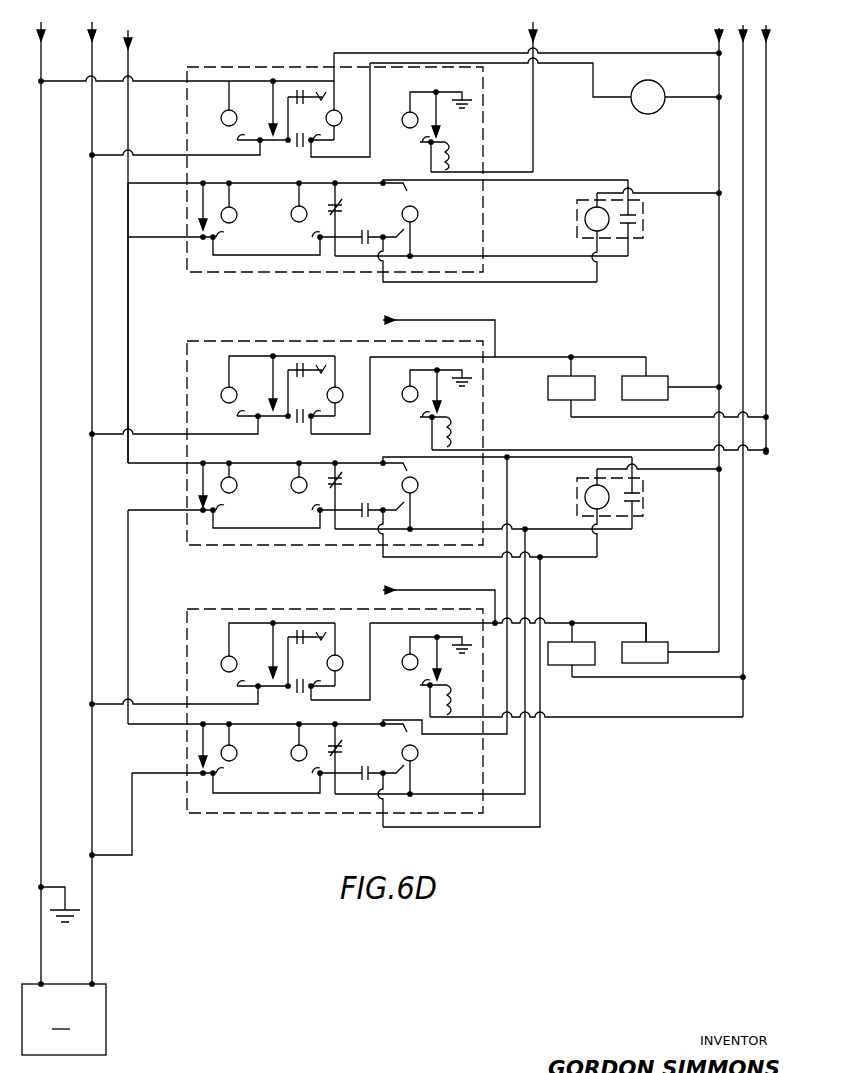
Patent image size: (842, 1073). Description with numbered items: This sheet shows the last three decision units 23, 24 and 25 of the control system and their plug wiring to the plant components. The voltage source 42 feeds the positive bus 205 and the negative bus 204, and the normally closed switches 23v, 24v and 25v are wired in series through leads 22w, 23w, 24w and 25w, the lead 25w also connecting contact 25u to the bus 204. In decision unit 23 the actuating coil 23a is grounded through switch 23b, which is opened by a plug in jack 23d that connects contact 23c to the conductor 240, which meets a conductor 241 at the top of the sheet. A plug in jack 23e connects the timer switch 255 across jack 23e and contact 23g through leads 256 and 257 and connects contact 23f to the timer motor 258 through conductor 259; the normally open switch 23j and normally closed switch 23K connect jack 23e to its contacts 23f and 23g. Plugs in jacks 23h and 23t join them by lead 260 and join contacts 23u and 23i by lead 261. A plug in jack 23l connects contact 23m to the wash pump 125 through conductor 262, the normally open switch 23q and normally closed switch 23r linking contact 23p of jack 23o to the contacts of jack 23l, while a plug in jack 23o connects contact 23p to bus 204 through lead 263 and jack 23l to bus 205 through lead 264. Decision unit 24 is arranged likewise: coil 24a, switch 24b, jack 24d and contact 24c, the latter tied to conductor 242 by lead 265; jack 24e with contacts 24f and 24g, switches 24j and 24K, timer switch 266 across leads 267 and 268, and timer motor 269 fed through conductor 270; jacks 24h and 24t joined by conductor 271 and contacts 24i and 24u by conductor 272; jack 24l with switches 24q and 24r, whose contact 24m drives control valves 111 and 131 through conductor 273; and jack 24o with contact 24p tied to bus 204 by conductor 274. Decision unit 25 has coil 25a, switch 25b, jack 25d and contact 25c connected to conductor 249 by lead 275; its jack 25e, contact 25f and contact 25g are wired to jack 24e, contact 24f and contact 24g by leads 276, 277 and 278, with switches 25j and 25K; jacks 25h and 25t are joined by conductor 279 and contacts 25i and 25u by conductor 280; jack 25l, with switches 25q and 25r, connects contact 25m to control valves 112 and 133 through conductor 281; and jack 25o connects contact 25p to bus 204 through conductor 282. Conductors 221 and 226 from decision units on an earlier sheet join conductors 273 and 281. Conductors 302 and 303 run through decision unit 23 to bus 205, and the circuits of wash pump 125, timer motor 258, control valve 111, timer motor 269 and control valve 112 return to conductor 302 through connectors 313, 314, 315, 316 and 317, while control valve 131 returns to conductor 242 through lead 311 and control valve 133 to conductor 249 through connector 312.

The positive bus 205 is at (41, 50).
The negative bus 204 is at (92, 50).
The voltage source 42 is at (64, 1018).
The lead 22w is at (128, 68).
The lead 23w is at (128, 318).
The lead 24w is at (128, 600).
The lead 25w is at (132, 838).
The conductor 241 is at (533, 50).
The conductor 302 is at (716, 36).
The conductor 249 is at (745, 90).
The conductor 242 is at (766, 52).
The conductor 303 is at (638, 45).
The conductor 262 is at (566, 63).
The wash pump 125 is at (648, 97).
The connector 313 is at (688, 97).
The connector 314 is at (686, 193).
The connector 315 is at (690, 387).
The lead 311 is at (670, 419).
The connector 316 is at (670, 472).
The connector 317 is at (690, 652).
The connector 312 is at (672, 680).
The lead 275 is at (668, 720).
The lead 265 is at (535, 448).
The conductor 273 is at (538, 357).
The control valve 131 is at (571, 386).
The control valve 111 is at (645, 378).
The control valve 133 is at (571, 649).
The control valve 112 is at (645, 643).
The conductor 281 is at (580, 623).
The conductor 226 is at (421, 586).
The conductor 221 is at (452, 312).
The conductor 240 is at (483, 176).
The decision unit 23 is at (278, 67).
The lead 264 is at (166, 82).
The lead 263 is at (140, 155).
The lead 260 is at (260, 183).
The jack 23o is at (222, 116).
The normally closed switch 23b is at (272, 113).
The normally closed switch 23r is at (298, 90).
The jack 23l is at (326, 118).
The contact 23p is at (235, 141).
The normally open switch 23q is at (300, 150).
The contact 23m is at (324, 138).
The timer motor 258 is at (363, 96).
The normally closed switch 23v is at (204, 206).
The jack 23t is at (237, 215).
The contact 23u is at (220, 238).
The lead 261 is at (254, 256).
The jack 23h is at (293, 208).
The contact 23i is at (311, 238).
The normally closed switch 23K is at (348, 210).
The normally open switch 23j is at (364, 245).
The contact 23g is at (402, 189).
The lead 257 is at (500, 189).
The contact 23f is at (390, 232).
The jack 23e is at (418, 214).
The lead 256 is at (492, 259).
The conductor 259 is at (492, 289).
The timer switch 255 is at (640, 222).
The jack 23d is at (404, 125).
The contact 23c is at (424, 145).
The electromagnetic actuating coil 23a is at (447, 150).
The decision unit 24 is at (218, 341).
The conductor 271 is at (262, 463).
The conductor 274 is at (158, 434).
The jack 24o is at (223, 393).
The normally closed switch 24b is at (271, 374).
The normally closed switch 24r is at (298, 365).
The jack 24l is at (326, 395).
The contact 24p is at (235, 417).
The normally open switch 24q is at (300, 426).
The contact 24m is at (324, 414).
The normally closed switch 24v is at (201, 485).
The jack 24t is at (237, 485).
The contact 24u is at (220, 511).
The conductor 272 is at (254, 529).
The jack 24h is at (294, 480).
The contact 24i is at (311, 511).
The normally closed switch 24K is at (348, 485).
The normally open switch 24j is at (364, 526).
The contact 24g is at (402, 469).
The lead 268 is at (522, 461).
The contact 24f is at (390, 506).
The jack 24e is at (418, 485).
The lead 267 is at (545, 529).
The conductor 270 is at (446, 560).
The timer motor 269 is at (577, 498).
The timer switch 266 is at (644, 501).
The lead 278 is at (506, 507).
The lead 276 is at (530, 540).
The lead 277 is at (541, 606).
The jack 24d is at (404, 391).
The contact 24c is at (424, 420).
The electromagnetic actuating coil 24a is at (447, 430).
The decision unit 25 is at (187, 630).
The conductor 279 is at (248, 714).
The conductor 282 is at (158, 704).
The jack 25o is at (223, 662).
The normally closed switch 25b is at (271, 648).
The normally closed switch 25r is at (297, 632).
The jack 25l is at (326, 663).
The contact 25p is at (235, 687).
The normally open switch 25q is at (300, 696).
The contact 25m is at (324, 684).
The normally closed switch 25v is at (201, 745).
The jack 25t is at (236, 759).
The contact 25u is at (220, 774).
The conductor 280 is at (256, 794).
The jack 25h is at (293, 749).
The contact 25i is at (311, 774).
The normally closed switch 25K is at (348, 754).
The normally open switch 25j is at (364, 790).
The contact 25g is at (402, 730).
The contact 25f is at (390, 769).
The jack 25e is at (418, 753).
The jack 25d is at (404, 658).
The contact 25c is at (424, 688).
The electromagnetic actuating coil 25a is at (449, 698).